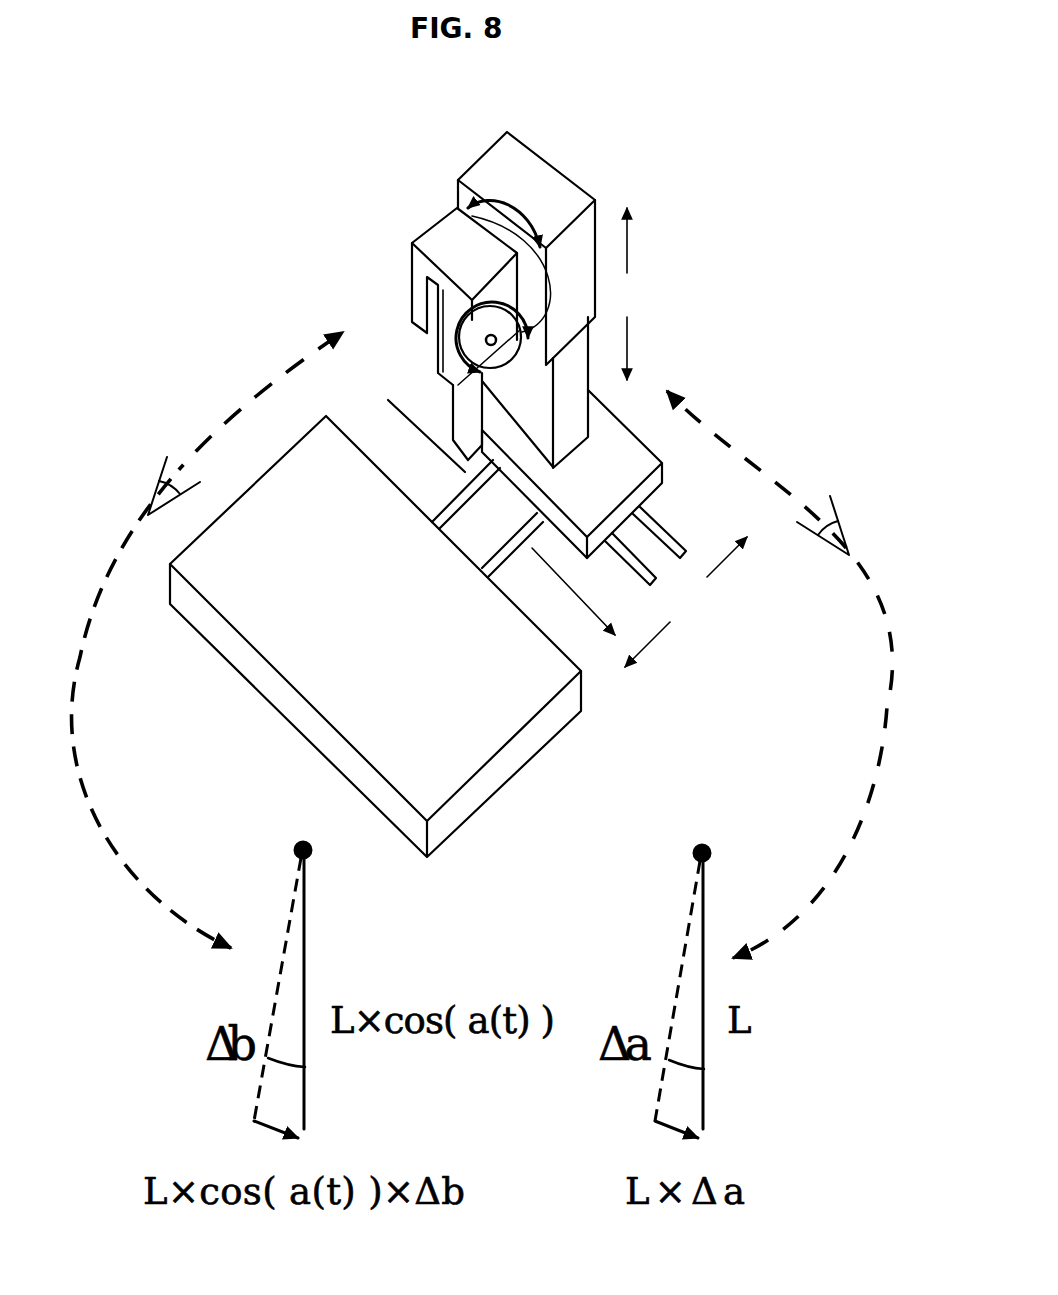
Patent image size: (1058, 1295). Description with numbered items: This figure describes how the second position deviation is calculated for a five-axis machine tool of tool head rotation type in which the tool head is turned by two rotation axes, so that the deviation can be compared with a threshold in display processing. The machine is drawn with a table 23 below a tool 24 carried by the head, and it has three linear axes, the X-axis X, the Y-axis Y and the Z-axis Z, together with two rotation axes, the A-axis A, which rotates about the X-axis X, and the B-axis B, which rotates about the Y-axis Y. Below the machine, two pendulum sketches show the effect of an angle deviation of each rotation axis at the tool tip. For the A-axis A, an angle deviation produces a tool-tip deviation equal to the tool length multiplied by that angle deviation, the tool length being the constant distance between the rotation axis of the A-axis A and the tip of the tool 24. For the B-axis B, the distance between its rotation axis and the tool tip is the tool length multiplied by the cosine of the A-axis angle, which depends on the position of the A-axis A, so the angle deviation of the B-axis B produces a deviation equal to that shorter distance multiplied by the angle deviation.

The table 23 is at (506, 700).
The tool 24 is at (460, 400).
The A-axis A is at (492, 350).
The B-axis B is at (509, 254).
The X-axis X is at (550, 568).
The Y-axis Y is at (686, 602).
The Z-axis Z is at (631, 294).